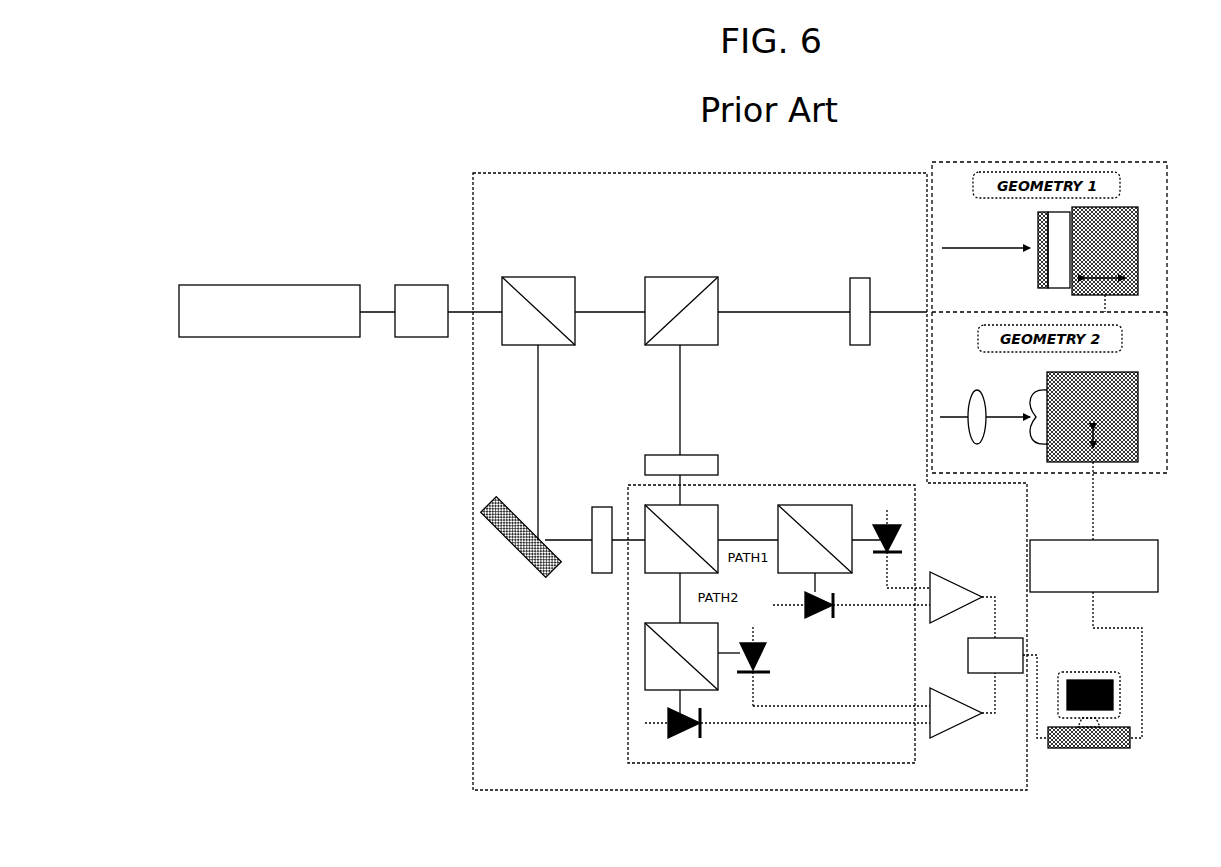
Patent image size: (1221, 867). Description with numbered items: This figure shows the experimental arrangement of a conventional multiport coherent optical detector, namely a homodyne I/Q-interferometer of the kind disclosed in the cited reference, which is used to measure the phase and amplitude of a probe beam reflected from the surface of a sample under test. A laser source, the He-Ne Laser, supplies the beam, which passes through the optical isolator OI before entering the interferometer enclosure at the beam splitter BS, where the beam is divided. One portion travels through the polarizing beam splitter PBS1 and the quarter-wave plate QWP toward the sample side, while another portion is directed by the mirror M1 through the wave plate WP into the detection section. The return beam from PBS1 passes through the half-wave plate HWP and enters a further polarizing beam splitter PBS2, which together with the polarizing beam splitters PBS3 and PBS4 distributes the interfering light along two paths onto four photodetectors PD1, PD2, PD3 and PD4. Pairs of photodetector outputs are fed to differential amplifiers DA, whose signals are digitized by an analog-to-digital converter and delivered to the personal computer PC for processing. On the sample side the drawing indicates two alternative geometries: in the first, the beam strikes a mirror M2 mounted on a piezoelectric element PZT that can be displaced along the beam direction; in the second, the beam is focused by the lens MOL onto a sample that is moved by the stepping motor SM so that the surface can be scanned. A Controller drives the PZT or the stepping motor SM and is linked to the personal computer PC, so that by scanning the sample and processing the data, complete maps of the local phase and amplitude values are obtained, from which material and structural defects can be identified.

The helium-neon laser He-Ne Laser is at (269, 311).
The optical isolator OI is at (421, 311).
The beam splitter BS is at (538, 311).
The polarizing beam splitter 1 PBS1 is at (681, 311).
The quarter-wave plate QWP is at (860, 301).
The half-wave plate HWP is at (699, 465).
The mirror M1 is at (521, 537).
The wave plate WP is at (601, 526).
The polarizing beam splitter 2 PBS2 is at (681, 539).
The polarizing beam splitter 3 PBS3 is at (815, 539).
The polarizing beam splitter 4 PBS4 is at (681, 656).
The photodetector 1 PD1 is at (901, 539).
The photodetector 2 PD2 is at (851, 617).
The photodetector 3 PD3 is at (833, 666).
The photodetector 4 PD4 is at (787, 732).
The differential amplifier DA is at (956, 655).
The mirror M2 is at (1054, 250).
The piezoelectric transducer PZT is at (1105, 251).
The micro objective lens MOL is at (978, 409).
The stepping motor SM is at (1092, 417).
The controller Controller is at (1094, 566).
The personal computer PC is at (1089, 720).